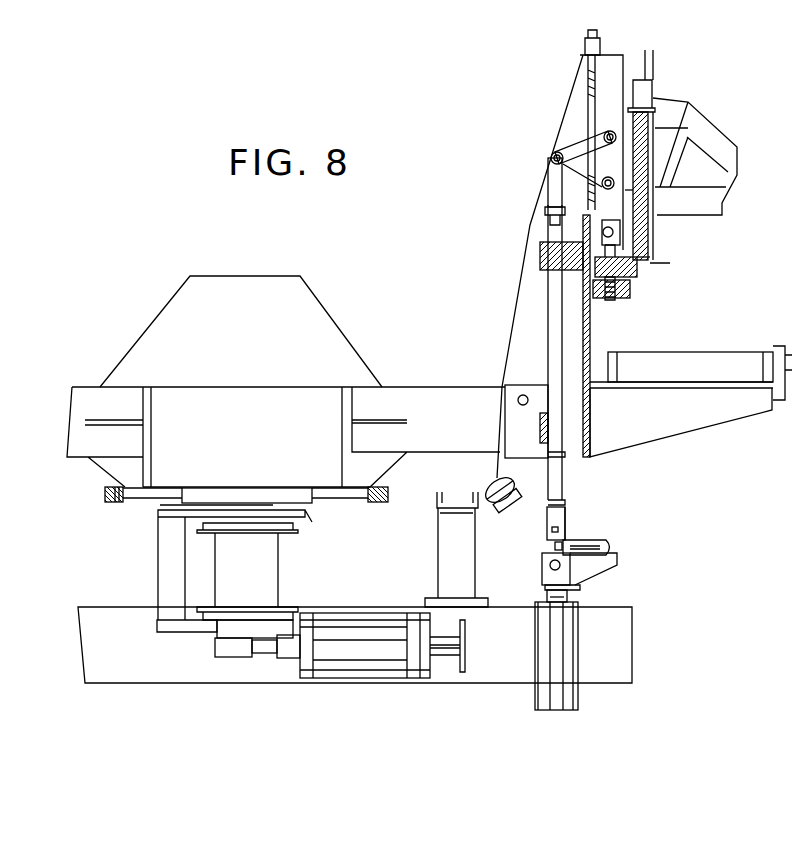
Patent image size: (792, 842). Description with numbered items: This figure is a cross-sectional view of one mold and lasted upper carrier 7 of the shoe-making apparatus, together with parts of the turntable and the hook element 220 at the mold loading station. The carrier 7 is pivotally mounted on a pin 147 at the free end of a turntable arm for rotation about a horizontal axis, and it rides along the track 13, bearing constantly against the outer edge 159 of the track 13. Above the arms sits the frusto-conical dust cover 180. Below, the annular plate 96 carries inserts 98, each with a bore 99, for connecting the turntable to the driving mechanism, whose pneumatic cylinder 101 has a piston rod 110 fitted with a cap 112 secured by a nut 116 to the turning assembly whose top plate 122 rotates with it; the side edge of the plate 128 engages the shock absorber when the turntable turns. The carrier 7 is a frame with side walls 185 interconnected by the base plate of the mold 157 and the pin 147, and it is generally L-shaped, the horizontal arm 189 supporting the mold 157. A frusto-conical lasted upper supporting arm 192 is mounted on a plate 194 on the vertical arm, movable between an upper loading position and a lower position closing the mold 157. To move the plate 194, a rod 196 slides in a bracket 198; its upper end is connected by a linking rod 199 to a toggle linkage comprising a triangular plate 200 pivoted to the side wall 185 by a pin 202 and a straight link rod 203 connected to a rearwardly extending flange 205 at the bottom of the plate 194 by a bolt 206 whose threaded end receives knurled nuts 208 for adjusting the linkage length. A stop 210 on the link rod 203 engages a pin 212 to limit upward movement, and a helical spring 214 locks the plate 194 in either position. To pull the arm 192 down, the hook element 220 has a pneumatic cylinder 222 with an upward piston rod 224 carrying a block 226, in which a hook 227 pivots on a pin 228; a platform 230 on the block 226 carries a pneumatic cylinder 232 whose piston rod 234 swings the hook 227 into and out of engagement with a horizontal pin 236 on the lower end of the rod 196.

The mold and lasted upper carrier 7 is at (522, 275).
The track 13 is at (443, 495).
The annular plate 96 is at (340, 496).
The insert 98 is at (118, 503).
The bore 99 is at (121, 512).
The pneumatic cylinder 101 is at (343, 660).
The piston rod 110 is at (263, 650).
The sleeve or cap 112 is at (236, 658).
The nut 116 is at (216, 656).
The top plate 122 is at (298, 517).
The plate 128 is at (158, 585).
The pin 147 is at (517, 401).
The mold 157 is at (740, 352).
The outer edge 159 is at (484, 484).
The frusto-conical dust cover 180 is at (170, 302).
The side wall 185 is at (518, 364).
The horizontal arm 189 is at (733, 408).
The lasted upper supporting arm 192 is at (722, 205).
The plate 194 is at (640, 282).
The rod 196 is at (552, 332).
The bracket 198 is at (600, 350).
The linking rod 199 is at (550, 183).
The triangular plate 200 is at (570, 147).
The pin 202 is at (617, 128).
The straight link rod 203 is at (615, 208).
The rearwardly extending flange 205 is at (640, 268).
The bolt 206 is at (608, 301).
The knurled nuts 208 is at (632, 292).
The stop 210 is at (648, 220).
The pin 212 is at (625, 192).
The helical spring 214 is at (585, 73).
The hook element 220 is at (630, 500).
The pneumatic cylinder 222 is at (560, 660).
The piston rod 224 is at (580, 595).
The block 226 is at (545, 586).
The hook 227 is at (555, 546).
The pin 228 is at (550, 565).
The platform 230 is at (615, 570).
The pneumatic cylinder 232 is at (600, 540).
The piston rod 234 is at (562, 538).
The pin 236 is at (552, 529).